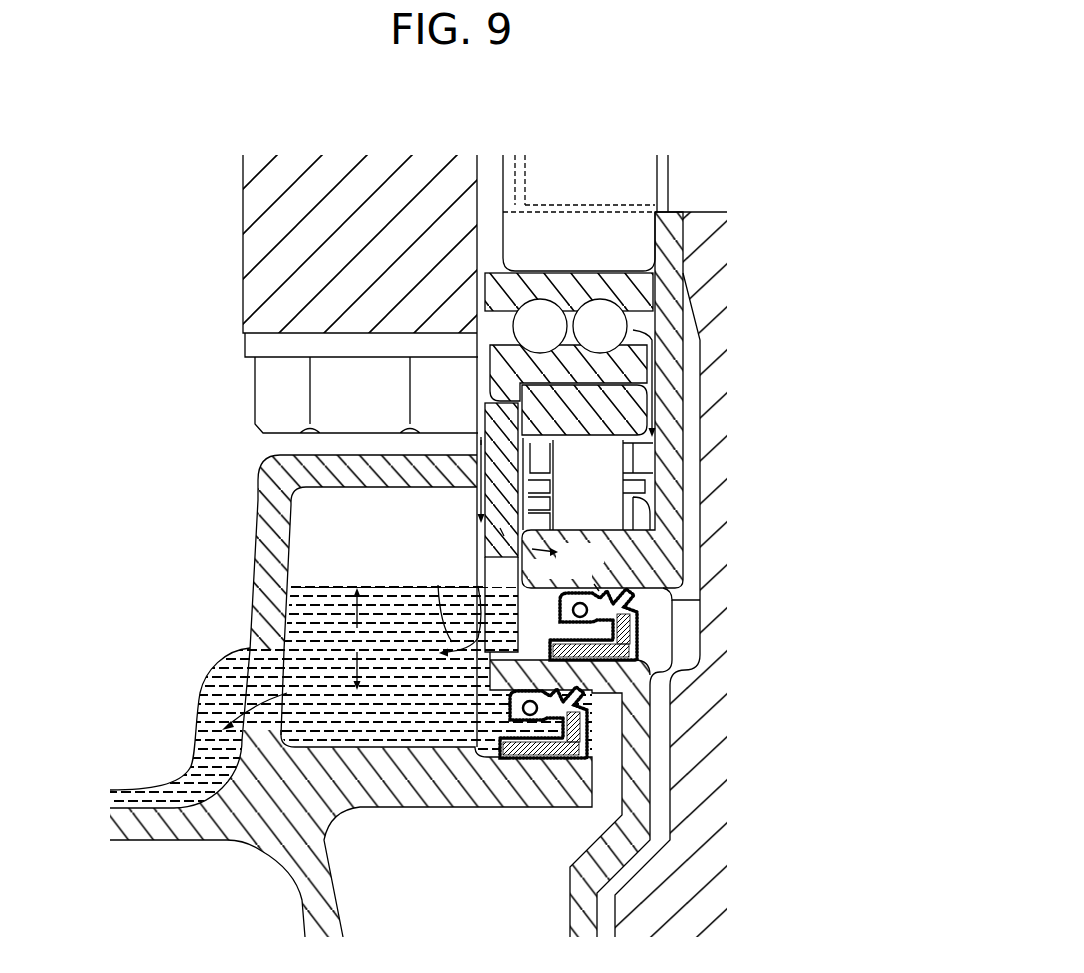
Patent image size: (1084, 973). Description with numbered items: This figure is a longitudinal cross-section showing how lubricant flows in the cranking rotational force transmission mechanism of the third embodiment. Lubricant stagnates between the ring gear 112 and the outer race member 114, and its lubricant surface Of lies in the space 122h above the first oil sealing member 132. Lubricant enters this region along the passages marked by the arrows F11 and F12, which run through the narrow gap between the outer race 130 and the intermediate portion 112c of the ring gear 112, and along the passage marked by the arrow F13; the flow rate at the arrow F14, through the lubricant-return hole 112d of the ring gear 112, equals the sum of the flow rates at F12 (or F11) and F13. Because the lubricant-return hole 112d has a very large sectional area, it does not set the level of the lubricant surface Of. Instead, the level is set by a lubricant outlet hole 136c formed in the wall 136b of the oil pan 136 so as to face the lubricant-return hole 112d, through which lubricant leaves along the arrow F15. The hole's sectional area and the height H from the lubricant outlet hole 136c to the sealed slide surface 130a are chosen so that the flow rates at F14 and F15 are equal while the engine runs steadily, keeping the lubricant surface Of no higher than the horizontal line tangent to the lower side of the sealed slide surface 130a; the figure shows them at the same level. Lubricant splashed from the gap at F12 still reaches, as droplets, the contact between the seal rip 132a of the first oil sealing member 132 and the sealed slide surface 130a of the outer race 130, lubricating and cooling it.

The ring gear 112 is at (484, 403).
The intermediate portion of the ring gear 112c is at (502, 534).
The lubricant-return hole 112d is at (478, 586).
The outer race member 114 is at (683, 430).
The space above the first oil sealing member 122h is at (594, 585).
The outer race 130 is at (667, 558).
The sealed slide surface 130a is at (676, 600).
The first oil sealing member 132 is at (640, 628).
The seal rip 132a is at (594, 588).
The oil pan 136 is at (173, 842).
The wall of the oil pan 136b is at (257, 502).
The lubricant outlet hole 136c is at (257, 670).
The arrow indicating a lubricant passage F11 is at (654, 395).
The arrow indicating a lubricant passage F12 is at (568, 554).
The arrow indicating a lubricant passage F13 is at (478, 447).
The arrow indicating a lubricant passage F14 is at (500, 567).
The arrow indicating a lubricant passage F15 is at (207, 704).
The lubricant surface Of is at (343, 587).
The height H is at (356, 639).